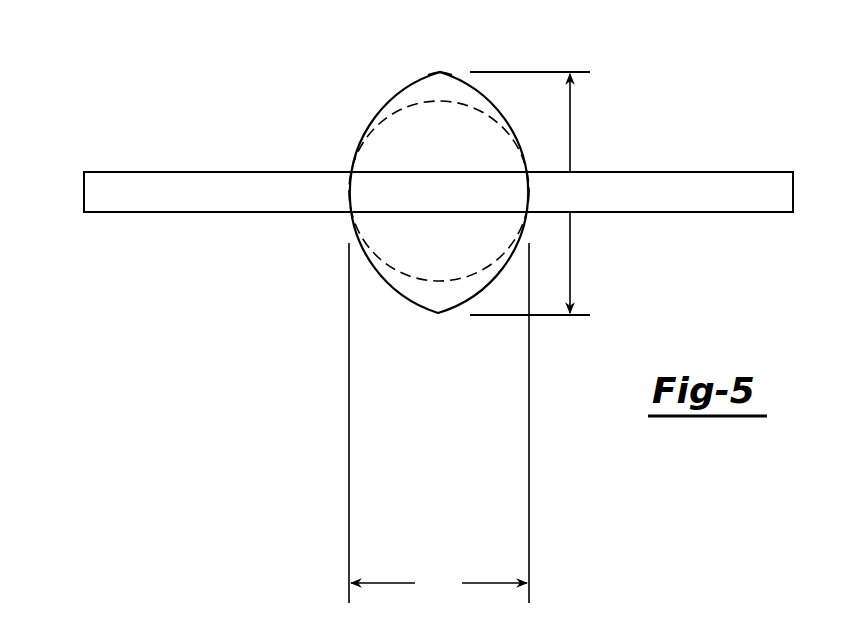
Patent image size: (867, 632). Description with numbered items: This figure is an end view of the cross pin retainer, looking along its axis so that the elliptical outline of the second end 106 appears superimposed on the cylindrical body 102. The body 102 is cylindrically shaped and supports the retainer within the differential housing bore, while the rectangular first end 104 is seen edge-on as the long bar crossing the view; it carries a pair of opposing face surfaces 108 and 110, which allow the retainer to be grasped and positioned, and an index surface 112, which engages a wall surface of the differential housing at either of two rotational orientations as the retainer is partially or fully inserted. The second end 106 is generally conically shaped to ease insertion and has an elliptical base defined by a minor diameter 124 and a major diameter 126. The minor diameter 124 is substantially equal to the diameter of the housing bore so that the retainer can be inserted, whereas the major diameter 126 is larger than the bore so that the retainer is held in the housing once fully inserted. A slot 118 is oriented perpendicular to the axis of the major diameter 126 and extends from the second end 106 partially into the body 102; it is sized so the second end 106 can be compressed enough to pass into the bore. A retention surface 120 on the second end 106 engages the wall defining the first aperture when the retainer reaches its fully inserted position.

The body 102 is at (373, 118).
The first end 104 is at (111, 166).
The second end 106 is at (391, 93).
The face surface 108 is at (122, 213).
The face surface 110 is at (170, 171).
The index surface 112 is at (184, 193).
The slot 118 is at (370, 175).
The retention surface 120 is at (439, 93).
The minor diameter 124 is at (439, 423).
The major diameter 126 is at (530, 193).